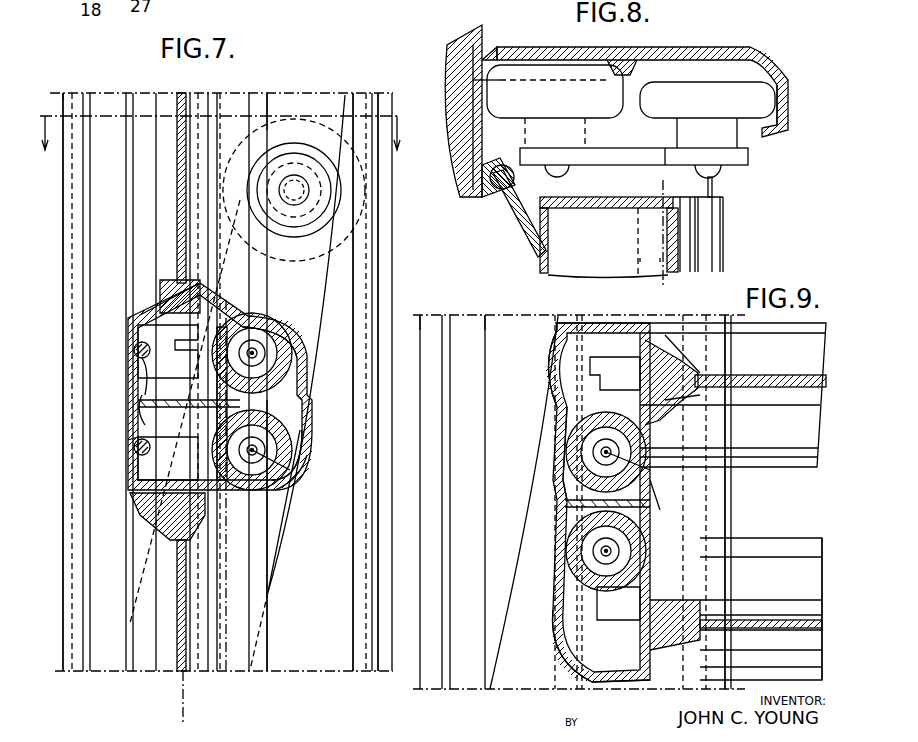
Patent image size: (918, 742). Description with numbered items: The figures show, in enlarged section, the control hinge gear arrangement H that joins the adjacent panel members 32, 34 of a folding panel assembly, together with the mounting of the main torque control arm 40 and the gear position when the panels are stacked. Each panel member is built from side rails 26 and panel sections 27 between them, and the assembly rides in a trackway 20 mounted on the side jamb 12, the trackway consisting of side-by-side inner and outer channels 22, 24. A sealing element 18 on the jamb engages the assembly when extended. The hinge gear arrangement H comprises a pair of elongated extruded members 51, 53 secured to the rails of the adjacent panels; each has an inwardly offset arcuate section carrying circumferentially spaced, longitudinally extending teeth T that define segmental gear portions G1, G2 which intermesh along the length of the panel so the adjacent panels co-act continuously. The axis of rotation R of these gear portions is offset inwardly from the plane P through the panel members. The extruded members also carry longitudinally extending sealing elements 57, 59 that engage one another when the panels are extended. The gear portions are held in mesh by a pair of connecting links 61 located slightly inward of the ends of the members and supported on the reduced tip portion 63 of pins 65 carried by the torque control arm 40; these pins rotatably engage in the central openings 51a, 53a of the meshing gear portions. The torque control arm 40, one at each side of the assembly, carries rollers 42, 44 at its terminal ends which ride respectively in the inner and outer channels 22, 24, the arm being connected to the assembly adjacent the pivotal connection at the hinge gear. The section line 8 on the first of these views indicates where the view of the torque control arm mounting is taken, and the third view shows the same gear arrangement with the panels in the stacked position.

In FIG. 7, the section line 8— 8 is at (220, 123).
In FIG. 8, the side jamb 12 is at (450, 43).
In FIG. 7, the sealing element 18 is at (100, 626).
In FIG. 8, the sealing element 18 is at (518, 228).
In FIG. 9, the sealing element 18 is at (468, 328).
In FIG. 7, the trackway 20 is at (378, 255).
In FIG. 8, the trackway 20 is at (740, 47).
In FIG. 9, the trackway 20 is at (520, 328).
In FIG. 7, the inner channel 22 is at (348, 302).
In FIG. 8, the inner channel 22 is at (688, 62).
In FIG. 9, the inner channel 22 is at (705, 483).
In FIG. 7, the outer channel 24 is at (204, 100).
In FIG. 8, the outer channel 24 is at (522, 62).
In FIG. 9, the outer channel 24 is at (545, 337).
In FIG. 7, the side rail 26 is at (162, 268).
In FIG. 9, the side rail 26 is at (700, 373).
In FIG. 7, the panel section 27 is at (177, 200).
In FIG. 9, the panel section 27 is at (815, 378).
In FIG. 7, the panel member 32 is at (270, 642).
In FIG. 9, the panel member 32 is at (795, 548).
In FIG. 7, the panel member 34 is at (267, 115).
In FIG. 8, the panel member 34 is at (723, 240).
In FIG. 9, the panel member 34 is at (683, 332).
In FIG. 7, the main torque control arm 40 is at (280, 542).
In FIG. 8, the main torque control arm 40 is at (748, 165).
In FIG. 9, the main torque control arm 40 is at (520, 607).
In FIG. 7, the roller 42 is at (323, 130).
In FIG. 8, the roller 42 is at (765, 98).
In FIG. 8, the roller 44 is at (470, 80).
In FIG. 7, the elongated extruded member 51 is at (135, 317).
In FIG. 9, the elongated extruded member 51 is at (635, 326).
In FIG. 7, the central opening 51a is at (262, 325).
In FIG. 9, the central opening 51a is at (560, 438).
In FIG. 7, the elongated extruded member 53 is at (136, 462).
In FIG. 9, the elongated extruded member 53 is at (560, 672).
In FIG. 7, the central opening 53a is at (258, 458).
In FIG. 9, the central opening 53a is at (565, 572).
In FIG. 7, the sealing element 57 is at (140, 380).
In FIG. 9, the sealing element 57 is at (555, 376).
In FIG. 7, the sealing element 59 is at (140, 412).
In FIG. 9, the sealing element 59 is at (553, 622).
In FIG. 7, the connecting link 61 is at (292, 404).
In FIG. 9, the connecting link 61 is at (655, 500).
In FIG. 7, the reduced tip portion 63 is at (254, 353).
In FIG. 9, the reduced tip portion 63 is at (650, 462).
In FIG. 8, the pin 65 is at (660, 262).
In FIG. 7, the segmental gear portion G1 is at (279, 353).
In FIG. 9, the segmental gear portion G1 is at (565, 476).
In FIG. 7, the segmental gear portion G2 is at (290, 440).
In FIG. 9, the segmental gear portion G2 is at (580, 522).
In FIG. 7, the teeth T is at (290, 347).
In FIG. 9, the teeth T is at (570, 462).
In FIG. 7, the control hinge gear arrangement H is at (345, 474).
In FIG. 9, the control hinge gear arrangement H is at (590, 497).
In FIG. 7, the axis of rotation R is at (278, 470).
In FIG. 8, the axis of rotation R is at (660, 238).
In FIG. 7, the plane P is at (180, 682).